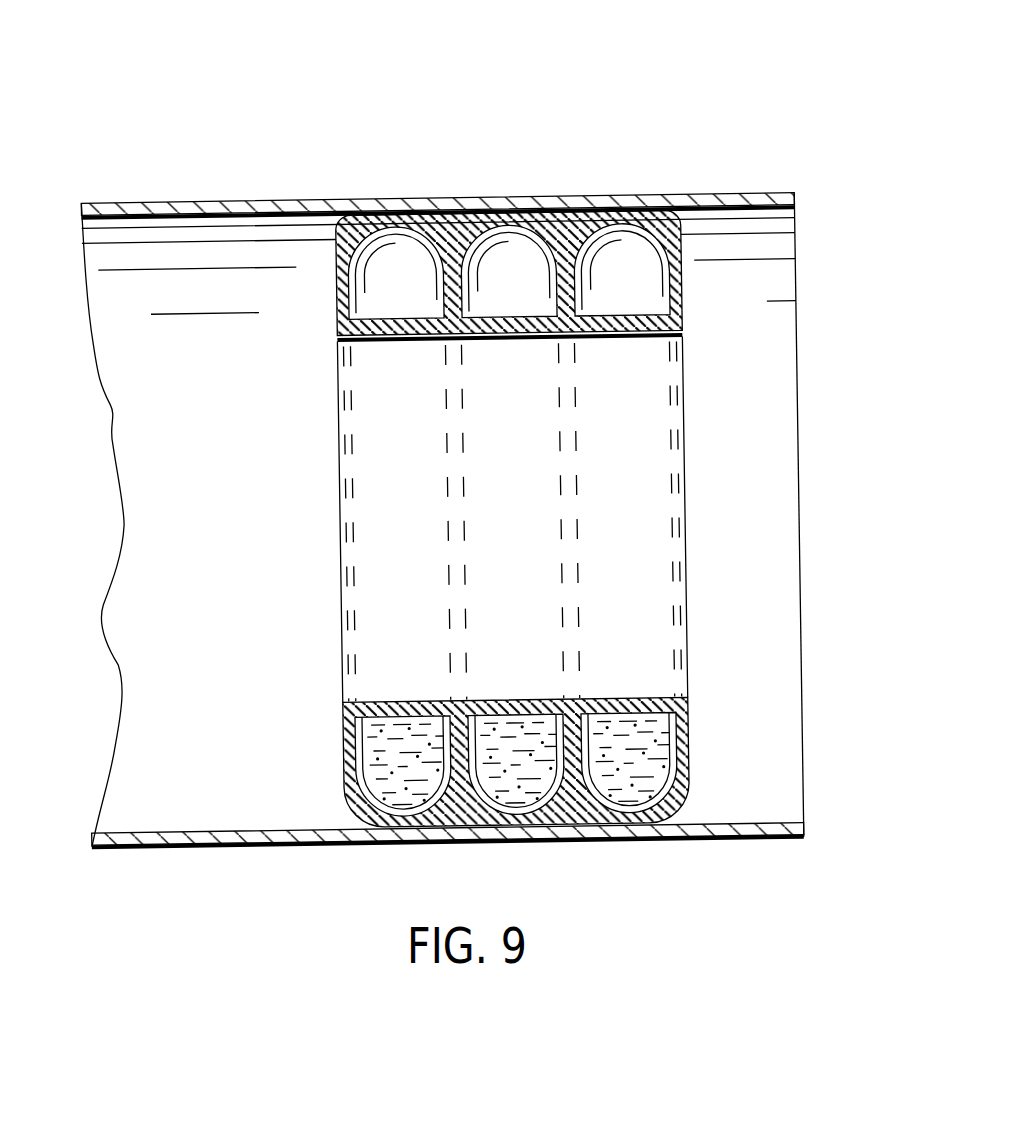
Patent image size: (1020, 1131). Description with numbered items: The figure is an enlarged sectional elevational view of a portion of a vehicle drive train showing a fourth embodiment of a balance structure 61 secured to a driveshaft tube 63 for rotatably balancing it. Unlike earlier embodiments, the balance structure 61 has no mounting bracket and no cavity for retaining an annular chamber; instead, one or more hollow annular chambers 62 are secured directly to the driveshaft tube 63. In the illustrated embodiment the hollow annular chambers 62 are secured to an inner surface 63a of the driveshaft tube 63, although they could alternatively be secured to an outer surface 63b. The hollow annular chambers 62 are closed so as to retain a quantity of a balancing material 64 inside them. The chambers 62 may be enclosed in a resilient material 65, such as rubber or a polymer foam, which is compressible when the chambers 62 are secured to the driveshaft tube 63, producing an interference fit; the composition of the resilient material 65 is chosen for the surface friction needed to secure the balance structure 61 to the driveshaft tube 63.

The balance structure 61 is at (294, 252).
The hollow annular chambers 62 is at (415, 215).
The driveshaft tube 63 is at (460, 109).
The inner surface 63a is at (745, 214).
The outer surface 63b is at (729, 192).
The balancing material 64 is at (650, 765).
The resilient material 65 is at (556, 838).